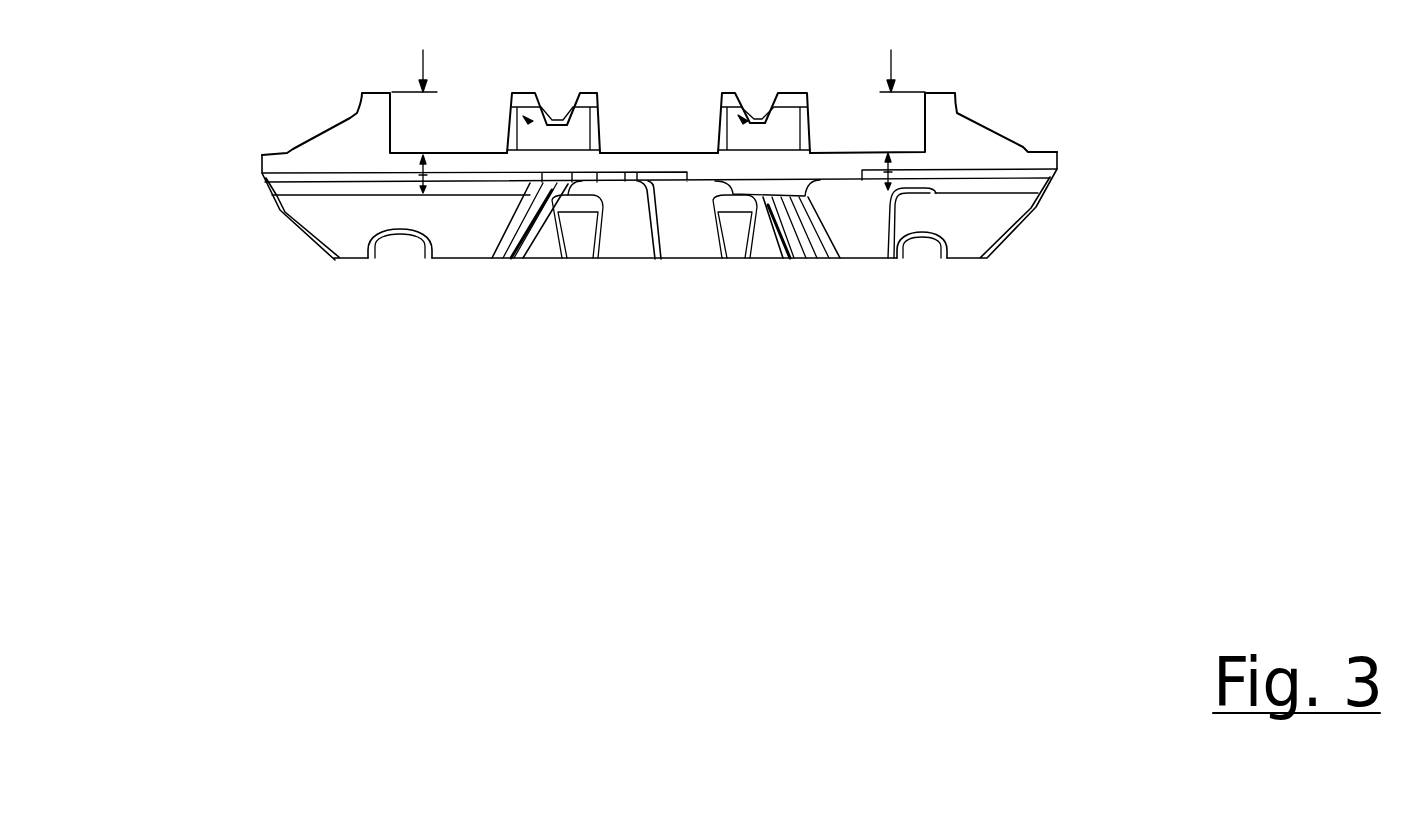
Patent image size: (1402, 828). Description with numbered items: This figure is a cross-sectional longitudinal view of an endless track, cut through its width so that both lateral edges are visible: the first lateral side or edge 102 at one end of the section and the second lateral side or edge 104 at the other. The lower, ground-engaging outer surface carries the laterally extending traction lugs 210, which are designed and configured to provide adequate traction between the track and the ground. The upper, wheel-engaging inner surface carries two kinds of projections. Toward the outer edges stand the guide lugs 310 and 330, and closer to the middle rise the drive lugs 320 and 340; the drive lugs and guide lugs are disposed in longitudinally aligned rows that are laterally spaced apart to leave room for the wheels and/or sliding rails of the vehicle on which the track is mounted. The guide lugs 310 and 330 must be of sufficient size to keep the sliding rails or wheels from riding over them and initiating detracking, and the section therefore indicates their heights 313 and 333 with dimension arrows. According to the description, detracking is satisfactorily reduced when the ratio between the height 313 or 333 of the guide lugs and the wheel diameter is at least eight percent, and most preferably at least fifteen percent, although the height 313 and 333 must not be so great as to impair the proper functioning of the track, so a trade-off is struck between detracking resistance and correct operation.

The first lateral side or edge 102 is at (258, 158).
The second lateral side or edge 104 is at (1058, 158).
The traction lugs 210 is at (690, 237).
The guide lug 310 is at (347, 135).
The height of guide lug 313 is at (426, 96).
The drive lug 320 is at (549, 100).
The guide lug 330 is at (957, 130).
The height of guide lug 333 is at (930, 95).
The drive lug 340 is at (752, 100).